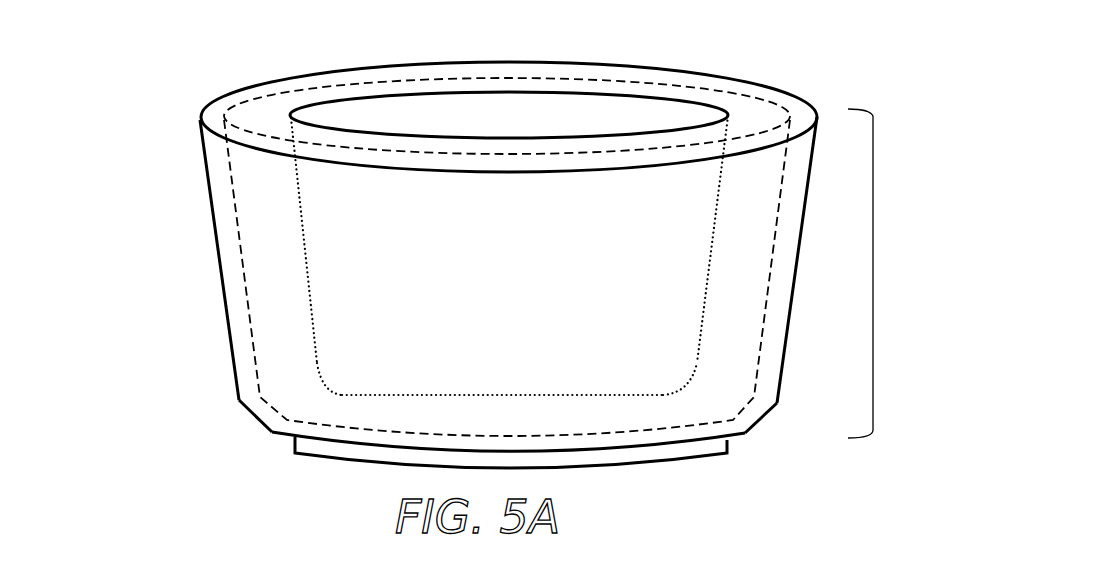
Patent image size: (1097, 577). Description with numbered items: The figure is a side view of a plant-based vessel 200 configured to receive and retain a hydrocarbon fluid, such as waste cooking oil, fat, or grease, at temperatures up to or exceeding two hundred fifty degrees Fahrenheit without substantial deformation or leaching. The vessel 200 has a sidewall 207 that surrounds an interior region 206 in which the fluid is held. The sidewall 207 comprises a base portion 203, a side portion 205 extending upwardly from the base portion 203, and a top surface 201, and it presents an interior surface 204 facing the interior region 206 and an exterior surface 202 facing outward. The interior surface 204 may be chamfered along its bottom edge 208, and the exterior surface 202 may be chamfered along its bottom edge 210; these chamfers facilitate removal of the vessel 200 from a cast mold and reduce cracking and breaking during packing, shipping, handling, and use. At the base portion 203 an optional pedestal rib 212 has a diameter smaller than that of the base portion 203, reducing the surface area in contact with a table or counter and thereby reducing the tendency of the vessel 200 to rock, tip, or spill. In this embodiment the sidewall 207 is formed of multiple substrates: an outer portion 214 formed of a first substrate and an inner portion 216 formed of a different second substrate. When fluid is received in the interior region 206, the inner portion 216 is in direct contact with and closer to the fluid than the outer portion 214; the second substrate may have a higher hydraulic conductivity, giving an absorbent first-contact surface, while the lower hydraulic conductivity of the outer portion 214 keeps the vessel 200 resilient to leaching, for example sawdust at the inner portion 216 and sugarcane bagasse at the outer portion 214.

The vessel 200 is at (143, 161).
The top surface 201 is at (253, 107).
The exterior surface 202 is at (217, 252).
The base portion 203 is at (410, 418).
The interior surface 204 is at (307, 333).
The side portion 205 is at (283, 273).
The interior region 206 is at (518, 112).
The sidewall 207 is at (873, 273).
The bottom edge of interior surface 208 is at (327, 373).
The bottom edge of exterior surface 210 is at (255, 422).
The pedestal rib 212 is at (717, 455).
The outer portion 214 is at (805, 112).
The inner portion 216 is at (750, 100).